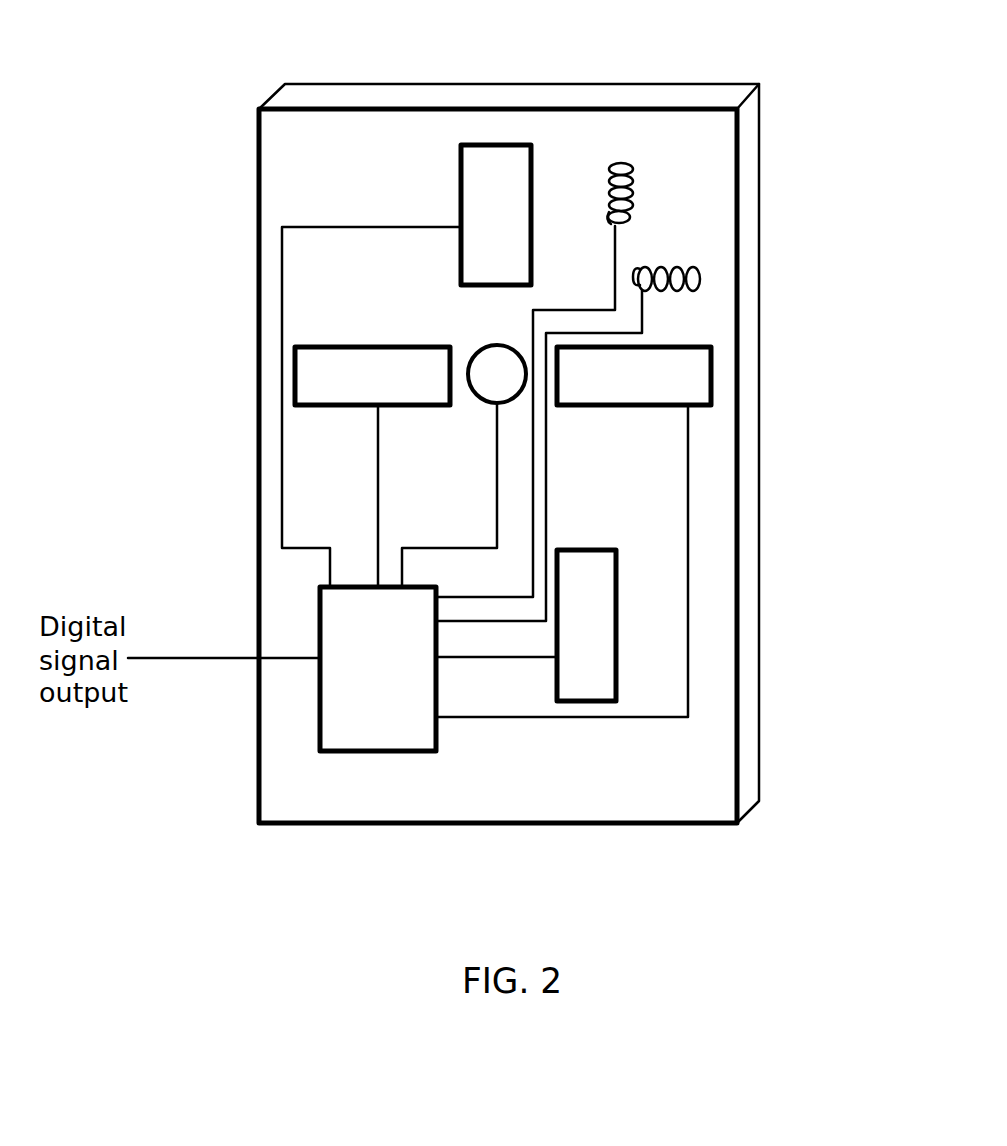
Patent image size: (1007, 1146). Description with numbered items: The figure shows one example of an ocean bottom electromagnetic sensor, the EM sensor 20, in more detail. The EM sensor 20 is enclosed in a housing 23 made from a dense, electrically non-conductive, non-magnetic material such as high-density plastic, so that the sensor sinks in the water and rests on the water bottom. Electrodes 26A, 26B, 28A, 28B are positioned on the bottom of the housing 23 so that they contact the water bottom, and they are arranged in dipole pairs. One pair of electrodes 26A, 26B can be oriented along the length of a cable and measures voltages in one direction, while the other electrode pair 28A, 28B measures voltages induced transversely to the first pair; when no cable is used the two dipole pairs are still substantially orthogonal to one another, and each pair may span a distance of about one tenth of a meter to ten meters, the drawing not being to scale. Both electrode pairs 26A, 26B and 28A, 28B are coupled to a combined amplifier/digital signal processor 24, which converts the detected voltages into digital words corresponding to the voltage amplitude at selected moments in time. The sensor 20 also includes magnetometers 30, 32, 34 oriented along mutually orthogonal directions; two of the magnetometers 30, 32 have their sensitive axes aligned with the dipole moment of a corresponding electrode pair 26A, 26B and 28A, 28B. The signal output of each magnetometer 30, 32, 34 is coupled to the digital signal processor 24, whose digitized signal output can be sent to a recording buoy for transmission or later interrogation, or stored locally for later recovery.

The EM sensor 20 is at (504, 66).
The housing 23 is at (573, 825).
The combined amplifier/digital signal processor 24 is at (316, 732).
The electrode 26A is at (317, 370).
The electrode 26B is at (695, 375).
The electrode 28A is at (596, 609).
The electrode 28B is at (516, 173).
The magnetometer 30 is at (635, 184).
The magnetometer 32 is at (700, 280).
The magnetometer 34 is at (503, 390).